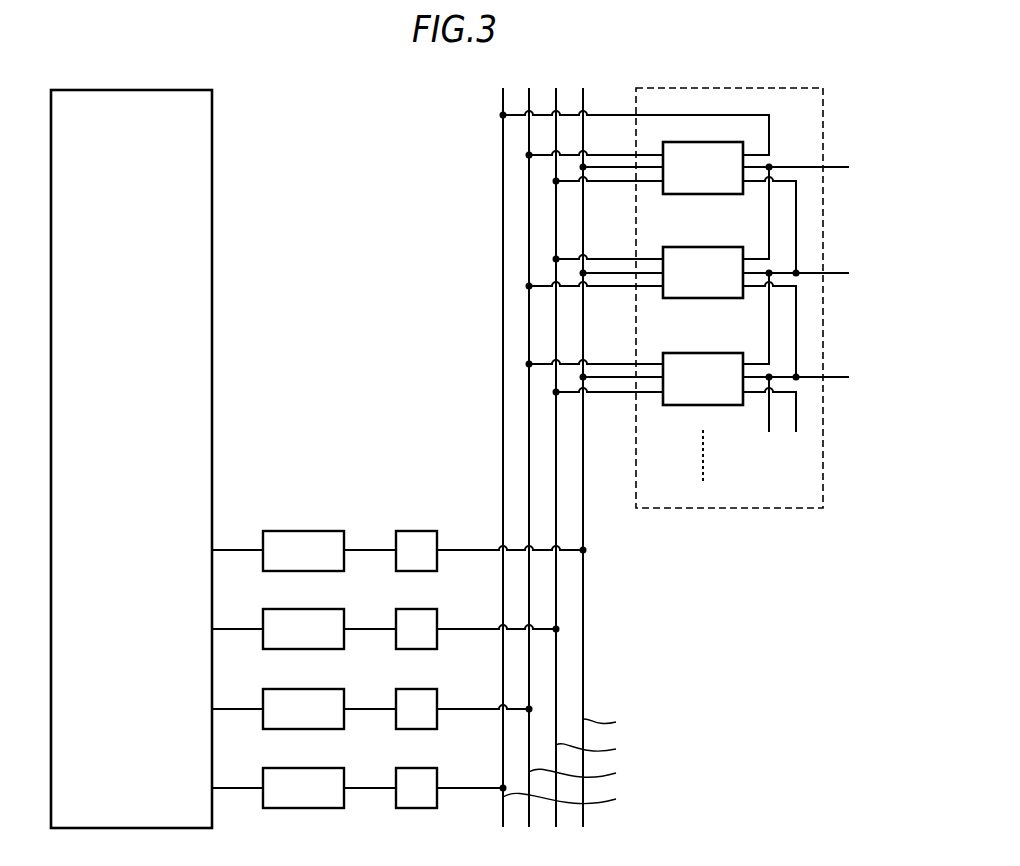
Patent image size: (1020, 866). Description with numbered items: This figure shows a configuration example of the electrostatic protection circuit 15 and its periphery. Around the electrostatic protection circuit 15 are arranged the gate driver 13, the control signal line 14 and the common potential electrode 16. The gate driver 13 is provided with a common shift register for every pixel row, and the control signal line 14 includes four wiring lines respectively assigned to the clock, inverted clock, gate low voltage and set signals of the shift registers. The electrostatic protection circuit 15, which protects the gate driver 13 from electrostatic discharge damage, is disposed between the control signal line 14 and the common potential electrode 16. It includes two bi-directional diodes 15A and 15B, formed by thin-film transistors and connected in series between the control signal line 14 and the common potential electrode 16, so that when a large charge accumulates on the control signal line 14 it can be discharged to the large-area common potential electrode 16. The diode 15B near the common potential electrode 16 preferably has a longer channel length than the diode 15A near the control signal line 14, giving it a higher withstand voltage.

The gate driver 13 is at (727, 88).
The control signal line 14 is at (587, 78).
The electrostatic protection circuit 15 is at (399, 619).
The diode 15A is at (416, 640).
The diode 15B is at (303, 531).
The common potential electrode 16 is at (130, 90).